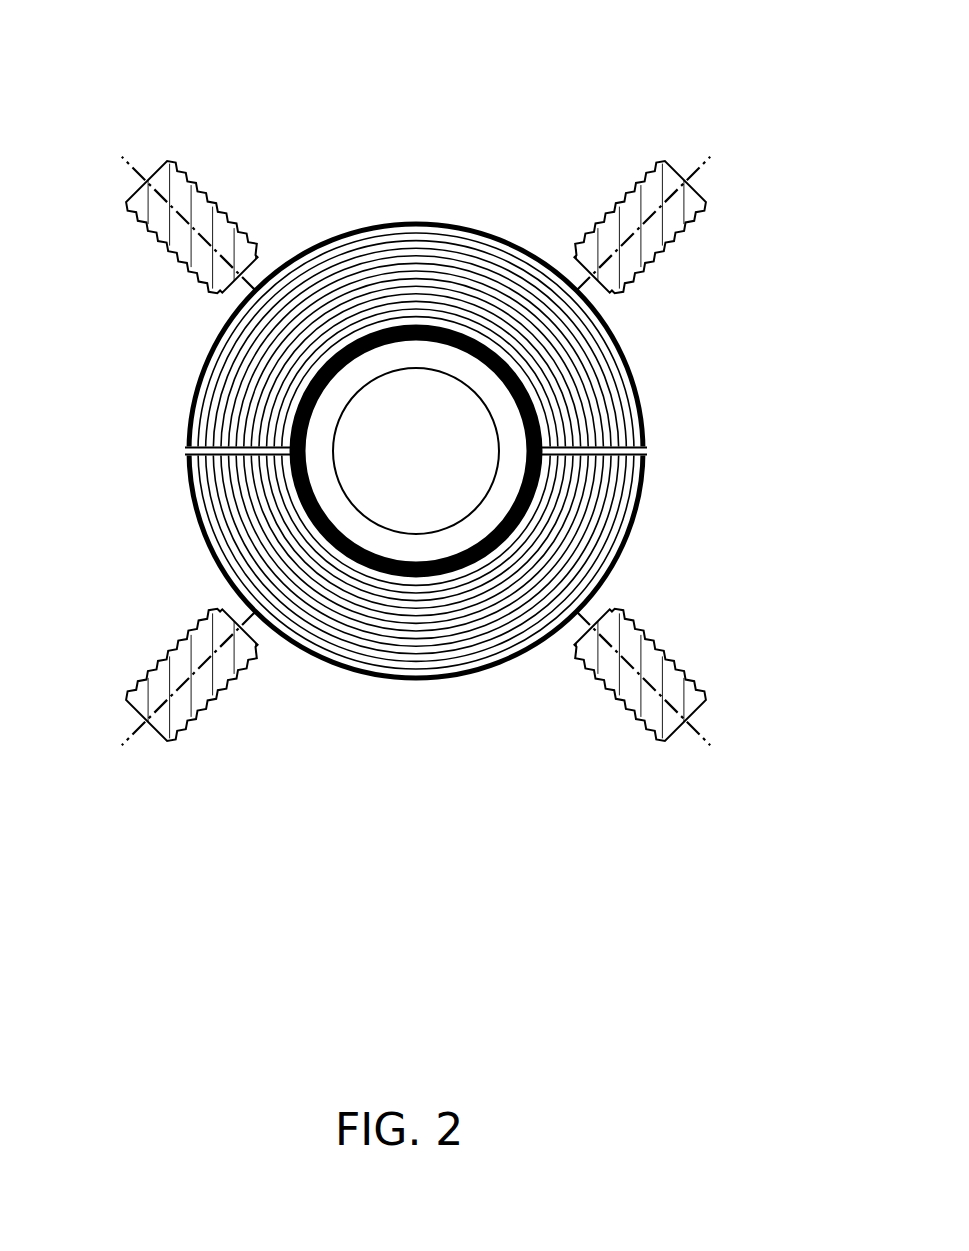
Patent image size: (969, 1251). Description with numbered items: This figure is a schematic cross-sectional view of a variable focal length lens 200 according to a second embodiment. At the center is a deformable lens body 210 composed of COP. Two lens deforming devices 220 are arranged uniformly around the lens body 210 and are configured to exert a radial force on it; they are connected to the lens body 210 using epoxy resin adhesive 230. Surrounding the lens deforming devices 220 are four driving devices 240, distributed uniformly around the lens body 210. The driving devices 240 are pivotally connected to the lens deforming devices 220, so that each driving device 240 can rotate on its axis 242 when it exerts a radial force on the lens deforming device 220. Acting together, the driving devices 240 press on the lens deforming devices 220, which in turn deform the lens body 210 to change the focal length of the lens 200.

The variable focal length lens 200 is at (442, 41).
The deformable lens body 210 is at (505, 415).
The lens deforming device 220 is at (240, 423).
The epoxy resin adhesive 230 is at (390, 327).
The driving device 240 is at (187, 238).
The axis 242 is at (137, 170).